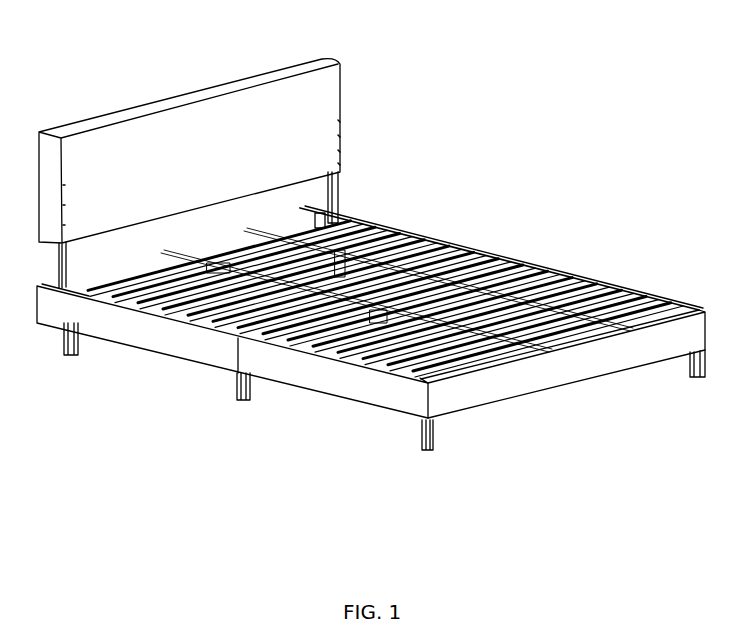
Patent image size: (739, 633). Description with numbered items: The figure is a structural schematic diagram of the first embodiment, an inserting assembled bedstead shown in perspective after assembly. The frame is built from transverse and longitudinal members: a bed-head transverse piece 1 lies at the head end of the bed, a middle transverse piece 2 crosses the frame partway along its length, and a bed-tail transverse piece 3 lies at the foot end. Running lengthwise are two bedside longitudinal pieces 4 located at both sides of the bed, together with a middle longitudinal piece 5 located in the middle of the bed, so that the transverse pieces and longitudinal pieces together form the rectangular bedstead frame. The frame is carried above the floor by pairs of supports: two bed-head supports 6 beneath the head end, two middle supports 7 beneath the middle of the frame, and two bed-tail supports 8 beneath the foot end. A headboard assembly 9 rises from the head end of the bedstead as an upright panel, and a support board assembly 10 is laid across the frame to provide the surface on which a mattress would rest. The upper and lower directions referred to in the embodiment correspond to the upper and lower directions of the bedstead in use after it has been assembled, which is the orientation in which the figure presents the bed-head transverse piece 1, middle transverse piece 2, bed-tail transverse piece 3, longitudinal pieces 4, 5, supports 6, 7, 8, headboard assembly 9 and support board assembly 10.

The bed-head transverse piece 1 is at (338, 215).
The middle transverse piece 2 is at (498, 260).
The bed-tail transverse piece 3 is at (643, 350).
The bedside longitudinal piece 4 is at (603, 290).
The middle longitudinal piece 5 is at (537, 270).
The bed-head support 6 is at (68, 358).
The middle support 7 is at (240, 403).
The bed-tail support 8 is at (427, 453).
The headboard assembly 9 is at (333, 92).
The support board assembly 10 is at (447, 247).